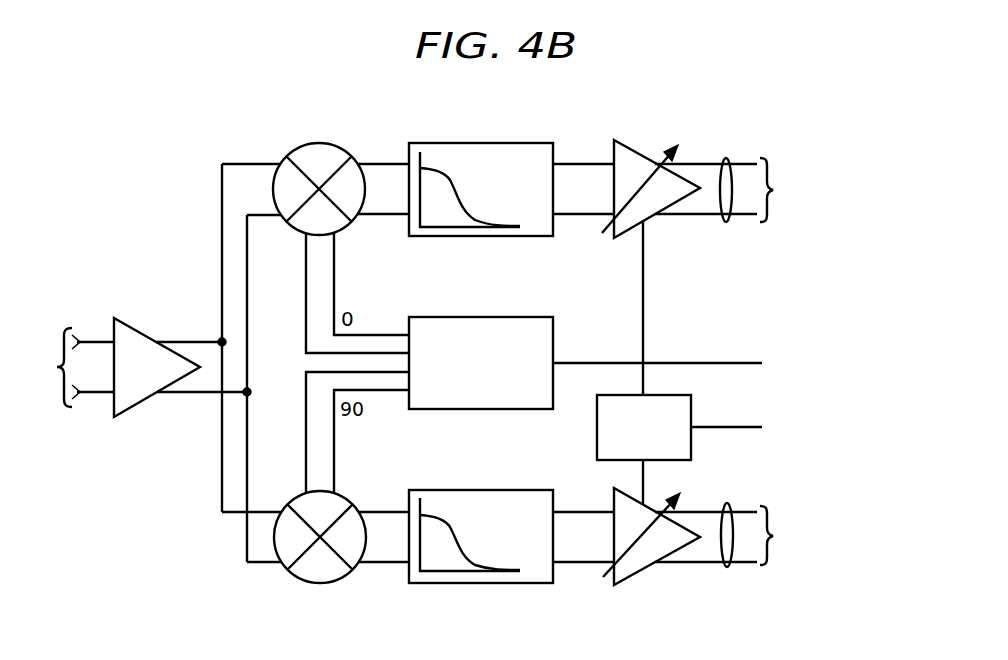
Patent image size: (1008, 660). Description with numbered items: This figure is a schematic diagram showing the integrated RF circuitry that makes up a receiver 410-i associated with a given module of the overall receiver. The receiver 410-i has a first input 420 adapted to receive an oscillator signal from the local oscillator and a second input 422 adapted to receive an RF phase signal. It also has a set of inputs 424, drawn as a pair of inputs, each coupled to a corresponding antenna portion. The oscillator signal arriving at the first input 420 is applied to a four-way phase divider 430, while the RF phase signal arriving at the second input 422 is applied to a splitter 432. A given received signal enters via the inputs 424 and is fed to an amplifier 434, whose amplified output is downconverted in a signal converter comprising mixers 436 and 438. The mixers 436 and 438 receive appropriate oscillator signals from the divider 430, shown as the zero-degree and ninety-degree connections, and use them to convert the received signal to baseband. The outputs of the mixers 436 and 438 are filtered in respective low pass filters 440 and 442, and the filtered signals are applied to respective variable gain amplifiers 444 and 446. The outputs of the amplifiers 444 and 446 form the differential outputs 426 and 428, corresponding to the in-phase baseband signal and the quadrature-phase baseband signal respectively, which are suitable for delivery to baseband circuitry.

The receiver 410-i is at (726, 73).
The first input 420 is at (668, 363).
The second input 422 is at (700, 427).
The set of inputs 424 is at (46, 367).
The differential output 426 is at (728, 157).
The differential output 428 is at (728, 568).
The four-way phase divider 430 is at (451, 317).
The splitter 432 is at (597, 430).
The amplifier 434 is at (138, 327).
The mixer 436 is at (319, 142).
The mixer 438 is at (318, 583).
The low pass filter 440 is at (445, 143).
The low pass filter 442 is at (445, 490).
The variable gain amplifier 444 is at (633, 140).
The variable gain amplifier 446 is at (636, 575).